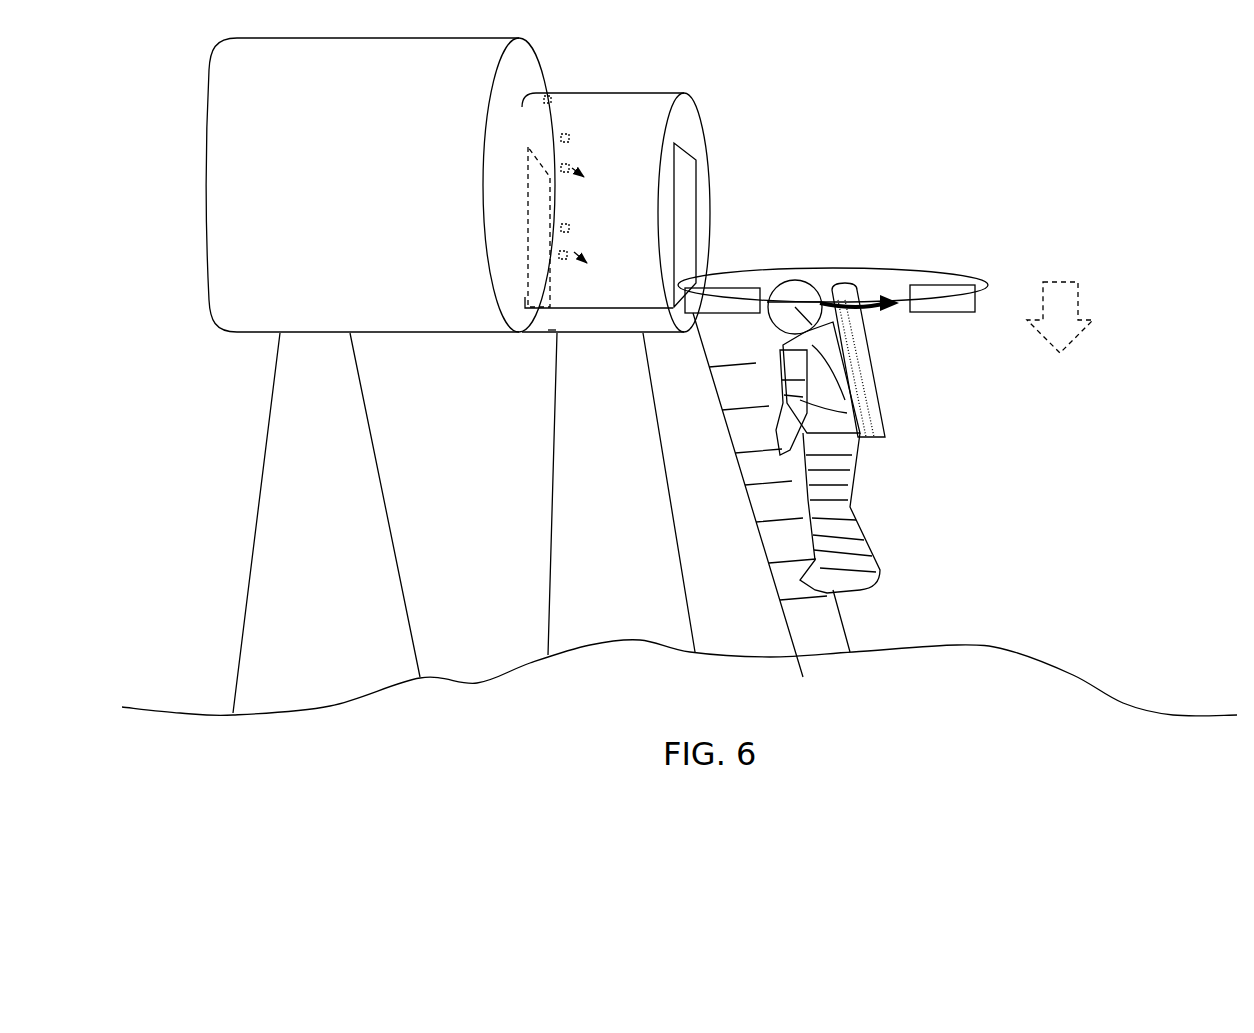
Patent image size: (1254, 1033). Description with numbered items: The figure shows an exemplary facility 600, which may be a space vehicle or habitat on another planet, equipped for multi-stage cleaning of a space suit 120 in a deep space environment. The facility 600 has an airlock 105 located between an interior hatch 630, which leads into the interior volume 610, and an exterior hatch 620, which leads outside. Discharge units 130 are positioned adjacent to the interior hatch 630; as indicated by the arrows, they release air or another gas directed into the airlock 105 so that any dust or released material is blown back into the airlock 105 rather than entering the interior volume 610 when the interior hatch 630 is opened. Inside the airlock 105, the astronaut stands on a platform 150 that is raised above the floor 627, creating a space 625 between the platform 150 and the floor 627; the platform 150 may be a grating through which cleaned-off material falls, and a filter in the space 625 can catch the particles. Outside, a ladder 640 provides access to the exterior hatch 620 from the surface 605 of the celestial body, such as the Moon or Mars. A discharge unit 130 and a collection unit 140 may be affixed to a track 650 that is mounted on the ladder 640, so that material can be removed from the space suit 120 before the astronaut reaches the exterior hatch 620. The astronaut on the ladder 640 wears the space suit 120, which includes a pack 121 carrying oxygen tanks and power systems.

The facility 600 is at (178, 85).
The interior volume 610 is at (383, 182).
The airlock 105 is at (625, 236).
The discharge unit 130 is at (688, 127).
The platform 150 is at (606, 307).
The exterior hatch 620 is at (685, 192).
The space 625 is at (555, 322).
The floor 627 is at (583, 333).
The interior hatch 630 is at (538, 178).
The ladder 640 is at (742, 473).
The track 650 is at (897, 265).
The collection unit 140 is at (715, 297).
The space suit 120 is at (847, 462).
The pack 121 is at (870, 400).
The surface 605 is at (1222, 696).